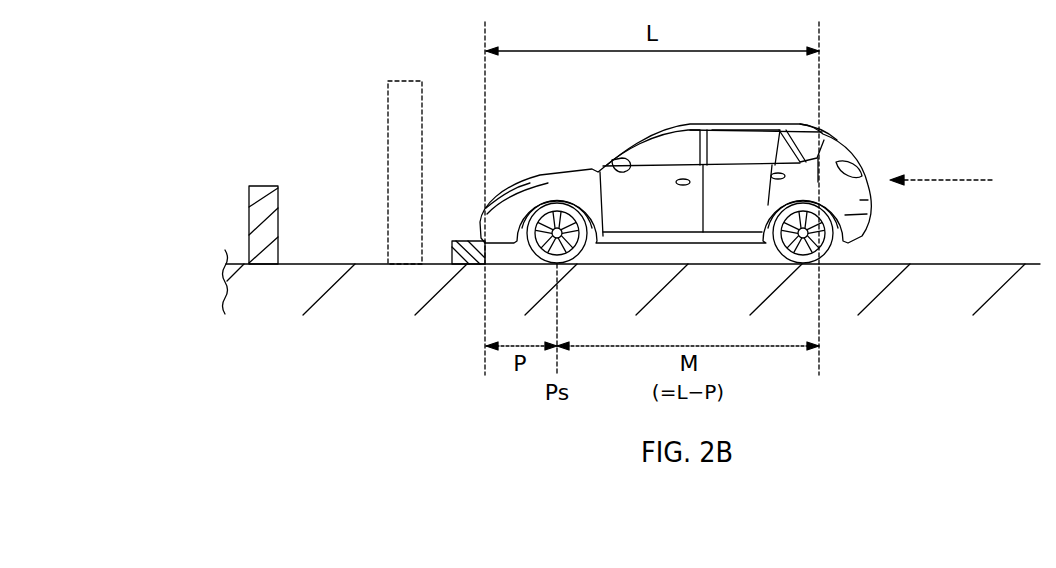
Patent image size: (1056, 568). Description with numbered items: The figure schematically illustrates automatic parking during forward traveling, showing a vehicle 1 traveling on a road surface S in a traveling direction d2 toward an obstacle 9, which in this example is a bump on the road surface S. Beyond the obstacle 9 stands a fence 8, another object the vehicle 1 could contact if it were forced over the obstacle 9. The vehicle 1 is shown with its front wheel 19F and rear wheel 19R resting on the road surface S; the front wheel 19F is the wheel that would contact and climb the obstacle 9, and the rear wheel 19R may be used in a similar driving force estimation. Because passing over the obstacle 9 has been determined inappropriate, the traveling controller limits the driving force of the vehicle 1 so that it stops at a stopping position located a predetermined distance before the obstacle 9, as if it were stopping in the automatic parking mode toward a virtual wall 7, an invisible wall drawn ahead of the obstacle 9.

The vehicle 1 is at (878, 90).
The virtual wall 7 is at (403, 80).
The fence 8 is at (259, 185).
The obstacle 9 is at (466, 240).
The front wheel 19F is at (562, 265).
The rear wheel 19R is at (790, 265).
The road surface S is at (340, 262).
The traveling direction d2 is at (938, 178).